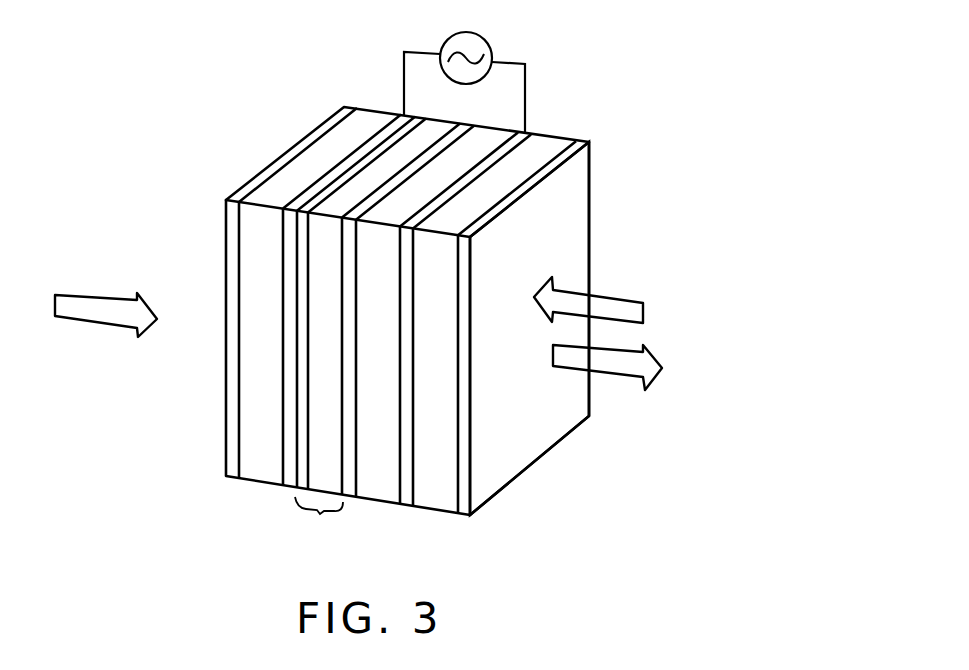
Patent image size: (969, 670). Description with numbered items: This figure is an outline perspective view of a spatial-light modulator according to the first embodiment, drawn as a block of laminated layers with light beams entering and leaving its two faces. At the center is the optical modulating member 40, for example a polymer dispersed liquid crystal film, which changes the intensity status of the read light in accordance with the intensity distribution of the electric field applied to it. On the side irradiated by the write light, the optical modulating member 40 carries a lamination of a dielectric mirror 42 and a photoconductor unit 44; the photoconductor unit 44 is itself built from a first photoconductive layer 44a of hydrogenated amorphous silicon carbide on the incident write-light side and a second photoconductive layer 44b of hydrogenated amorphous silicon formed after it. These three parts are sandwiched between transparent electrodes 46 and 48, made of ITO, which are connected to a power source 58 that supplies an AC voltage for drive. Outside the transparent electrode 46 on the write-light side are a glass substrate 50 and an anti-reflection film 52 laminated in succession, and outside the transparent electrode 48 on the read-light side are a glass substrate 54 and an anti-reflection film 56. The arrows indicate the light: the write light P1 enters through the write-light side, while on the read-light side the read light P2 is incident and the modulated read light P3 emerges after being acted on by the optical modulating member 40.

The optical modulating member 40 is at (383, 492).
The dielectric mirror 42 is at (348, 490).
The photoconductor unit 44 is at (319, 526).
The first photoconductive layer 44a is at (420, 117).
The second photoconductive layer 44b is at (435, 132).
The transparent electrode 46 is at (289, 474).
The transparent electrode 48 is at (408, 497).
The glass substrate 50 is at (248, 470).
The anti-reflection film 52 is at (230, 412).
The glass substrate 54 is at (445, 500).
The anti-reflection film 56 is at (503, 477).
The power source 58 is at (488, 36).
The input light beam P1 is at (82, 308).
The reflected light beam P2 is at (614, 307).
The transmitted light beam P3 is at (612, 367).